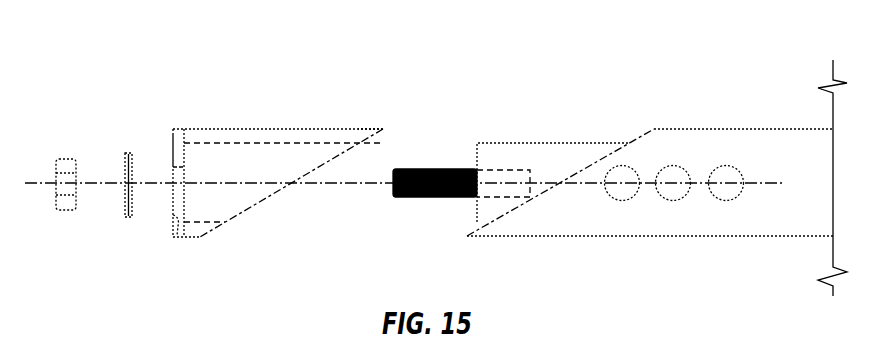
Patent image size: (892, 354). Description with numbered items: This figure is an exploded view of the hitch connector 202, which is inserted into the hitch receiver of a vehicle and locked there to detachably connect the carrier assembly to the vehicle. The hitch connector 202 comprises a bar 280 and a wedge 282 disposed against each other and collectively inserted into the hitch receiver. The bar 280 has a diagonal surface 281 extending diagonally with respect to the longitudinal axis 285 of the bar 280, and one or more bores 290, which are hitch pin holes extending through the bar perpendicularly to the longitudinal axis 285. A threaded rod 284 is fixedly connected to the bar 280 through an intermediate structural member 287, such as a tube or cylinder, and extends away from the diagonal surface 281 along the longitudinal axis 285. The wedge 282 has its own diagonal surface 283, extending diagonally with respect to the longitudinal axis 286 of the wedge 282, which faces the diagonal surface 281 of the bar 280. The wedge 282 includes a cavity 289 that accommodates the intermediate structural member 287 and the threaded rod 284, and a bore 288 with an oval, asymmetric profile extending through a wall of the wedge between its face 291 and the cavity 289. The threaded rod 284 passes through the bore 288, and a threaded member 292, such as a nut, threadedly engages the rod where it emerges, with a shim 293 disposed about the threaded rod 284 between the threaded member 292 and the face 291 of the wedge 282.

The hitch connector 202 is at (114, 49).
The bar 280 is at (678, 130).
The diagonal surface 281 is at (587, 168).
The wedge 282 is at (357, 129).
The diagonal surface 283 is at (254, 206).
The threaded rod 284 is at (430, 198).
The longitudinal axis 285 is at (772, 183).
The longitudinal axis 286 is at (212, 183).
The intermediate structural member 287 is at (497, 143).
The bore 288 is at (172, 236).
The cavity 289 is at (283, 143).
The bores 290 is at (726, 201).
The face 291 is at (173, 150).
The threaded member 292 is at (64, 211).
The shim 293 is at (128, 218).